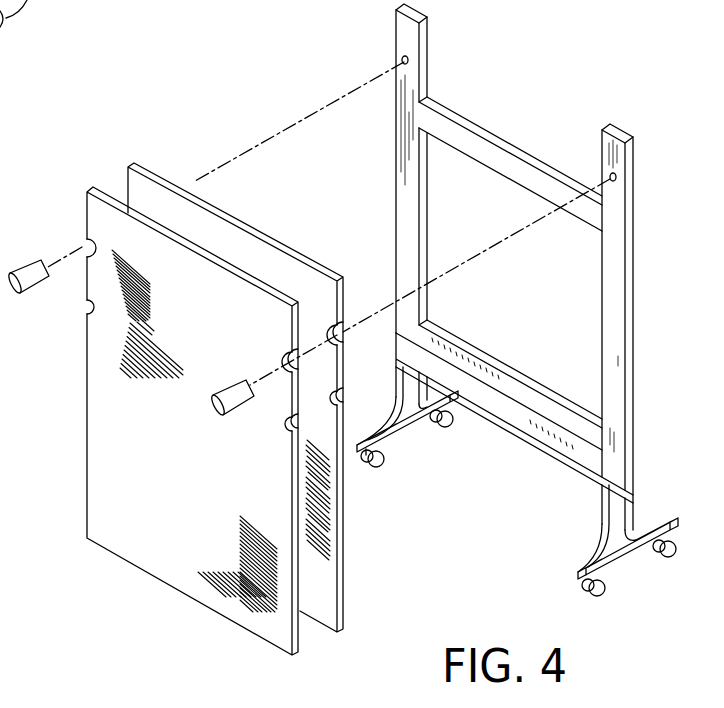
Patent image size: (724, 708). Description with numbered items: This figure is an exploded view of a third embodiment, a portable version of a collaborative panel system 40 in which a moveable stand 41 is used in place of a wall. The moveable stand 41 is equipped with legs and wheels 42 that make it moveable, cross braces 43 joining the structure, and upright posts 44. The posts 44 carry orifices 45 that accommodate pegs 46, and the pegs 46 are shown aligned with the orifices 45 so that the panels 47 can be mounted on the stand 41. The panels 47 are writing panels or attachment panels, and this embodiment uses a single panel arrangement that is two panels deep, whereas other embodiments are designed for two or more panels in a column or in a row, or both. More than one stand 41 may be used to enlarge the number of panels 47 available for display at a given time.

The collaborative panel system 40 is at (430, 315).
The moveable stand 41 is at (636, 498).
The legs and wheels 42 is at (645, 581).
The cross braces 43 is at (573, 236).
The posts 44 is at (633, 284).
The orifices 45 is at (403, 58).
The pegs 46 is at (32, 298).
The panels 47 is at (170, 320).